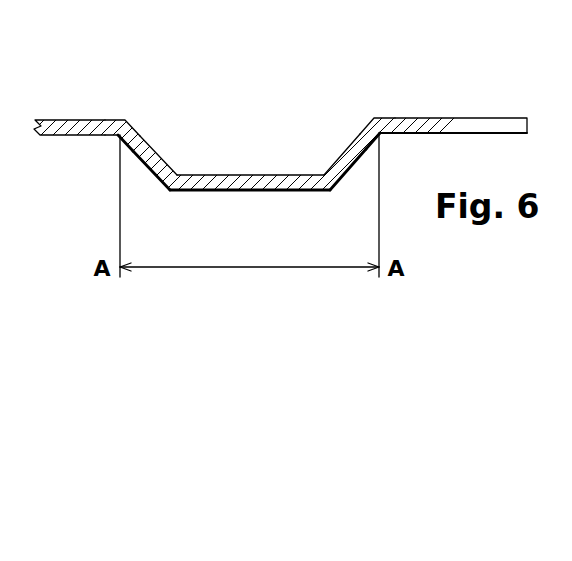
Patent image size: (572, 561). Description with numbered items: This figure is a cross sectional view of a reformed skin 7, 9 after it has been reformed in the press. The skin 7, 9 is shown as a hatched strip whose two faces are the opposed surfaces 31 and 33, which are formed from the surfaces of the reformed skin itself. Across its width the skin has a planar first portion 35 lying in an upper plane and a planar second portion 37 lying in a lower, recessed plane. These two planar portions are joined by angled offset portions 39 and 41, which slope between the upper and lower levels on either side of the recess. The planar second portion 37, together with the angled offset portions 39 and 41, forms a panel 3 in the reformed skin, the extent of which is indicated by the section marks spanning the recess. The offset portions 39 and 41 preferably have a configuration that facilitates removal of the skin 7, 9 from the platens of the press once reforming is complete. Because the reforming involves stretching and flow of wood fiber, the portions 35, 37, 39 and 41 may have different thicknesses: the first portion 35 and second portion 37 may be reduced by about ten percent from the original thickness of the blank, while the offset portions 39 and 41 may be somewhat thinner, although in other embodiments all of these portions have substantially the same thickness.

The panel 3 is at (286, 125).
The skin 7 is at (467, 102).
The skin 9 is at (470, 118).
The opposed surface 31 is at (58, 125).
The opposed surface 33 is at (93, 135).
The planar first portion 35 is at (388, 118).
The planar second portion 37 is at (265, 190).
The angled offset portion 39 is at (346, 150).
The angled offset portion 41 is at (150, 147).